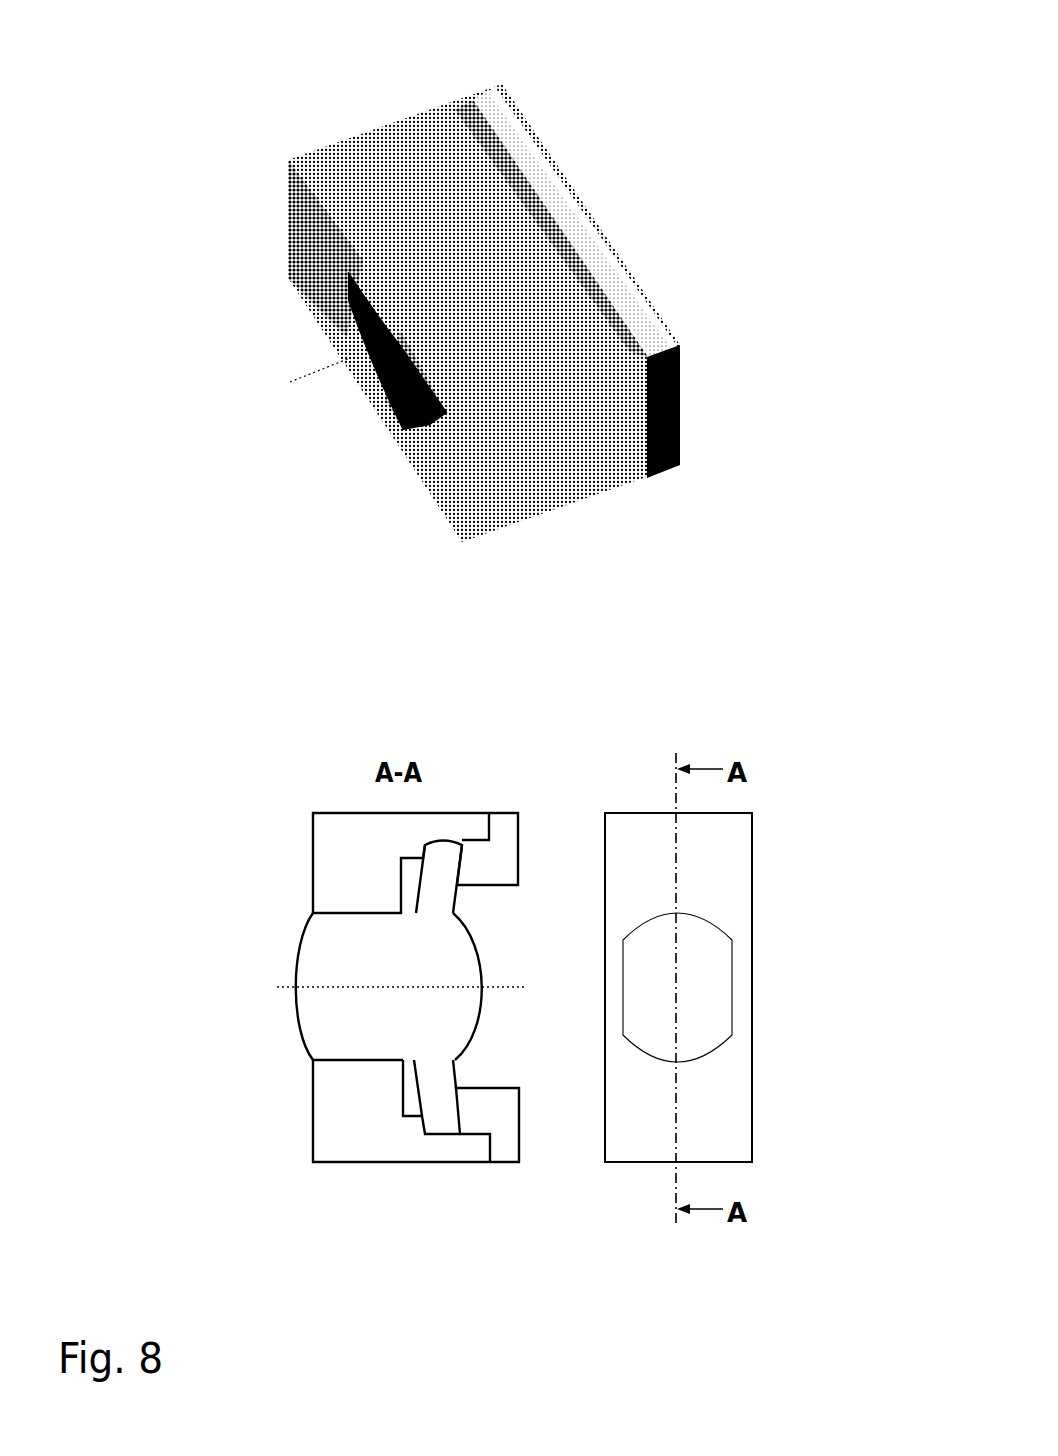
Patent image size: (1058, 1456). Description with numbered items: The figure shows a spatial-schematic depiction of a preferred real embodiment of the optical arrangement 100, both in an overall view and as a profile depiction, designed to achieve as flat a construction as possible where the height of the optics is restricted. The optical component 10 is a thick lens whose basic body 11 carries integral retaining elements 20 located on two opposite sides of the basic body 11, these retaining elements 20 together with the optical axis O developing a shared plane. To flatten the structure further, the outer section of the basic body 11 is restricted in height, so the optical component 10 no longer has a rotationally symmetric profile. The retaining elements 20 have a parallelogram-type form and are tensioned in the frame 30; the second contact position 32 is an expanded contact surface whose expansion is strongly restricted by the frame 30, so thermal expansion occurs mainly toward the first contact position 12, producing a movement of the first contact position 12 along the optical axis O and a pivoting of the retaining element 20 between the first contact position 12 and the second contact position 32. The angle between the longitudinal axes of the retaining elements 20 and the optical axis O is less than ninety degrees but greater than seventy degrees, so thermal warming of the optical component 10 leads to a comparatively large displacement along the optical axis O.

The optical arrangement 100 is at (594, 146).
The optical component 10 is at (367, 395).
The basic body 11 is at (377, 338).
The first contact position 12 is at (473, 232).
The retaining element 20 is at (443, 170).
The frame 30 is at (490, 435).
The second contact position 32 is at (587, 413).
The optical axis O is at (305, 380).